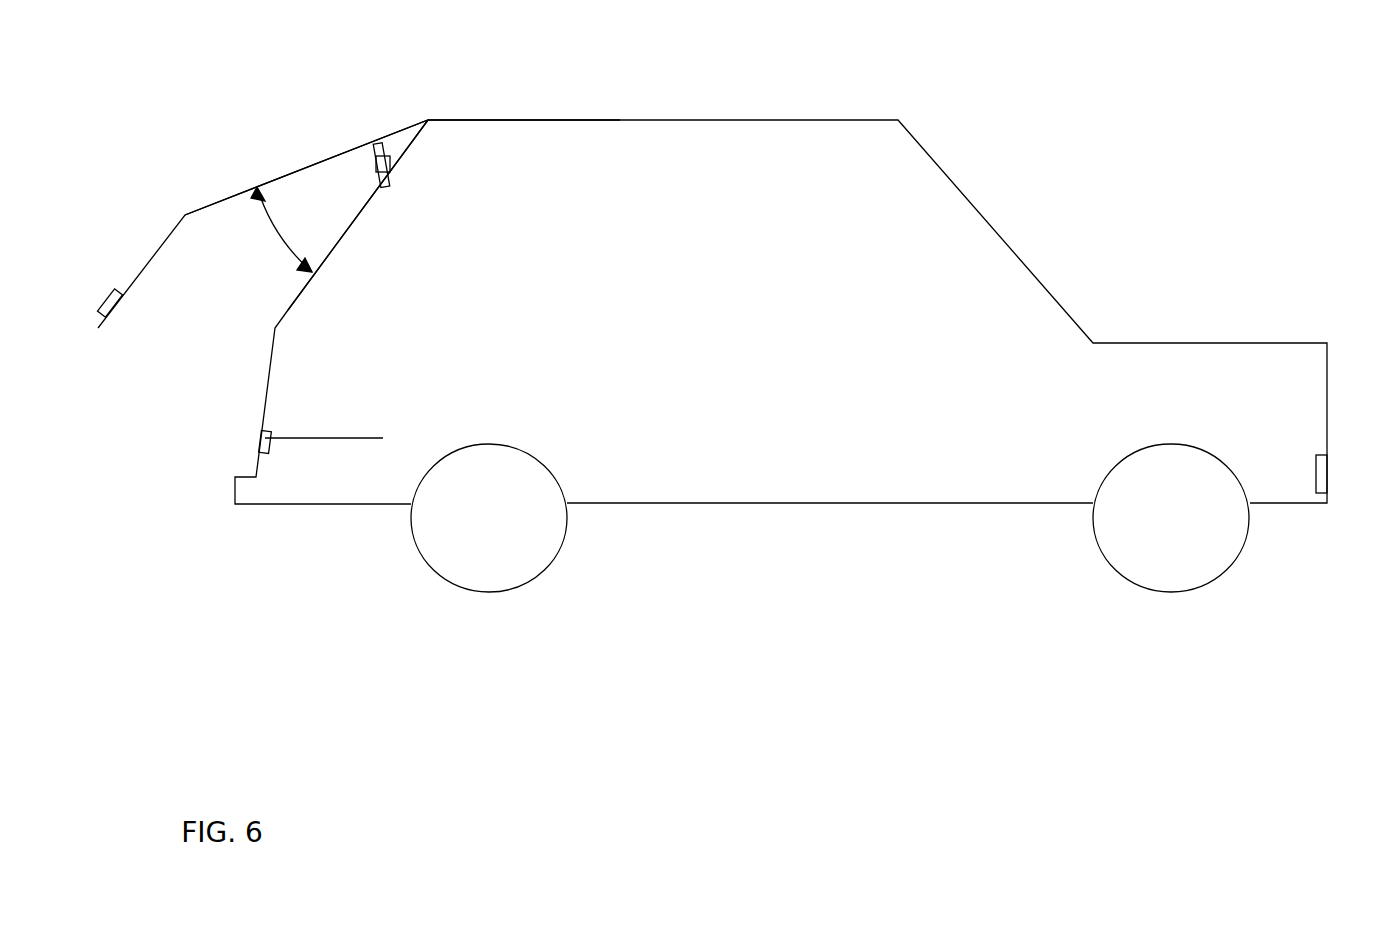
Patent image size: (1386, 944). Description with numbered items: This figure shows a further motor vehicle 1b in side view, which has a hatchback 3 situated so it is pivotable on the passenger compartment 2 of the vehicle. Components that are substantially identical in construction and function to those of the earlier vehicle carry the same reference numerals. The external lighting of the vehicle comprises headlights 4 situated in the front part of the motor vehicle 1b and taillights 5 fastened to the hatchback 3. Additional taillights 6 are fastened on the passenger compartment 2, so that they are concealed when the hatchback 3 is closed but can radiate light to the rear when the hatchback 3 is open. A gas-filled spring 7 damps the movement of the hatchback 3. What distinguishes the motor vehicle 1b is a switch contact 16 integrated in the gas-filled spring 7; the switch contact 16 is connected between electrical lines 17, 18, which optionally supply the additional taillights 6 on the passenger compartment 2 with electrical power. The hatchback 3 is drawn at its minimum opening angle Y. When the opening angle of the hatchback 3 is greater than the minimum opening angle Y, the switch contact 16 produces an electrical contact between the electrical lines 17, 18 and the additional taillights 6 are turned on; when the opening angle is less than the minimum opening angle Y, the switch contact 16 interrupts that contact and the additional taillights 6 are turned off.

The motor vehicle 1b is at (1046, 127).
The passenger compartment 2 is at (669, 472).
The hatchback 3 is at (171, 233).
The headlights 4 is at (1322, 473).
The taillights 5 is at (107, 290).
The additional taillights 6 is at (262, 438).
The gas-filled spring 7 is at (382, 438).
The switch contact 16 is at (518, 167).
The electrical line 17 is at (476, 165).
The electrical line 18 is at (322, 438).
The minimum opening angle Y is at (275, 237).